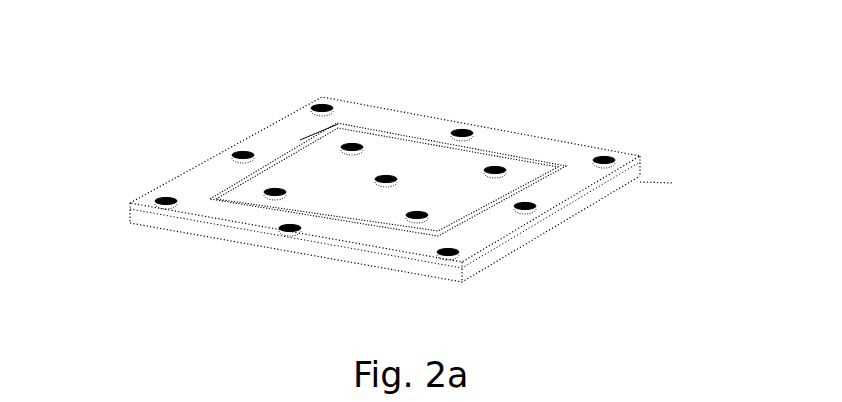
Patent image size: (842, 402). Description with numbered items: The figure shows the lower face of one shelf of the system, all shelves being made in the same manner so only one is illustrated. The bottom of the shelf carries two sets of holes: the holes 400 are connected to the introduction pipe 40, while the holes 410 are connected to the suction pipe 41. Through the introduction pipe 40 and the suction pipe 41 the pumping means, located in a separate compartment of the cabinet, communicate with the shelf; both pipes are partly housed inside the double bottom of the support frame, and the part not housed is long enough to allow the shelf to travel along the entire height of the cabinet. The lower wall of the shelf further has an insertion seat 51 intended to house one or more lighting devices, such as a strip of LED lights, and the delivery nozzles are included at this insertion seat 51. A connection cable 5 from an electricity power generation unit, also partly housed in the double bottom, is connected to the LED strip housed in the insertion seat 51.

The connection cable 5 is at (608, 217).
The introduction pipe 40 is at (553, 253).
The suction pipe 41 is at (652, 177).
The insertion seat 51 is at (297, 140).
The holes 400 is at (273, 195).
The holes 410 is at (332, 105).